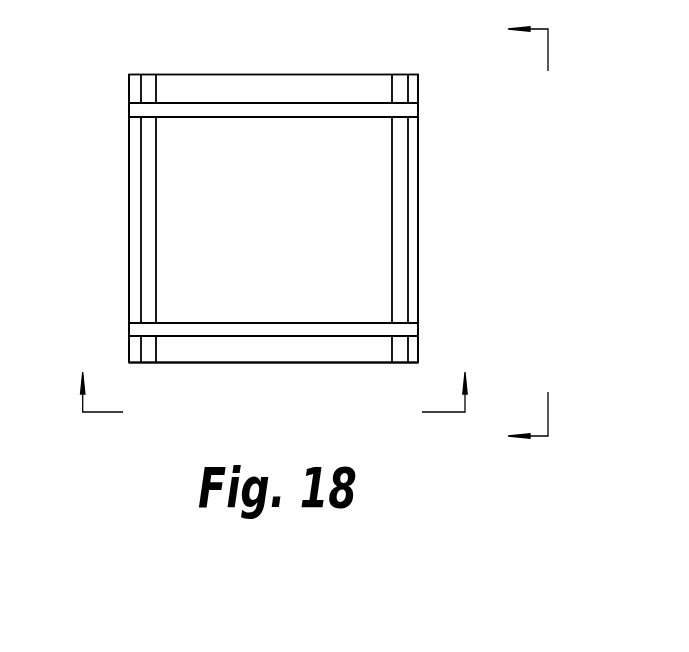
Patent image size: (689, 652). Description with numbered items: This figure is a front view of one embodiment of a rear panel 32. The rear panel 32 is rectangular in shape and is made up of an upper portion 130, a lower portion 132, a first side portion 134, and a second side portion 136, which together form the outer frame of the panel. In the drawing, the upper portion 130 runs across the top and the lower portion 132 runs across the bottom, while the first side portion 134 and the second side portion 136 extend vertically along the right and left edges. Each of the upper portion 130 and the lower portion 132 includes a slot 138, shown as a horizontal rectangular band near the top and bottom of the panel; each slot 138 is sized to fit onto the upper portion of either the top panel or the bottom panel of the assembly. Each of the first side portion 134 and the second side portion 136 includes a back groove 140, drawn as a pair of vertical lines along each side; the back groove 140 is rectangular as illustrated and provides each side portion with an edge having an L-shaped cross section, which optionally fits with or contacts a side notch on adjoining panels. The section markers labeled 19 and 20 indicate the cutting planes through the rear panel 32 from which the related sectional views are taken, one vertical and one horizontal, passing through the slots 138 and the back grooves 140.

The upper portion 130 is at (262, 88).
The lower portion 132 is at (242, 349).
The first side portion 134 is at (419, 168).
The second side portion 136 is at (128, 203).
The slot 138 is at (410, 109).
The back groove 140 is at (147, 350).
The rear panel 32 is at (413, 275).
The section line 19- 19 is at (550, 233).
The section line 20- 20 is at (273, 414).